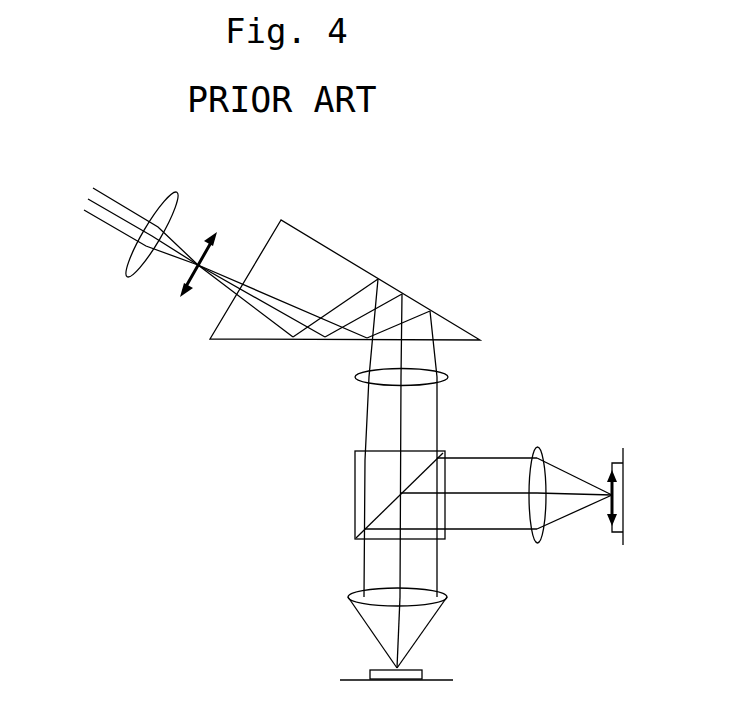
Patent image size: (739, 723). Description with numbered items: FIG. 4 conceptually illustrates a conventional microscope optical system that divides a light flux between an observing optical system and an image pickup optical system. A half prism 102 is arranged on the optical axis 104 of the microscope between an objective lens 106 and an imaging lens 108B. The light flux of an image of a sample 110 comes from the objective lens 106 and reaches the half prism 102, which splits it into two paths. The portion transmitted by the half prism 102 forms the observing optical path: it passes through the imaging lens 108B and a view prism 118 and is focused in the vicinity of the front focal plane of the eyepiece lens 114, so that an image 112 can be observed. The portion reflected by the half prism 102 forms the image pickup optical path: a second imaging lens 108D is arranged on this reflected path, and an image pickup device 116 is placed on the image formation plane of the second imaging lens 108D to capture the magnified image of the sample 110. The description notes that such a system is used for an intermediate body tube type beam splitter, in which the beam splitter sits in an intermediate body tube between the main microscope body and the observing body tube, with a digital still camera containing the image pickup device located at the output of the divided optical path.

The half prism 102 is at (441, 539).
The optical axis 104 is at (402, 413).
The objective lens 106 is at (358, 592).
The imaging lens 108B is at (355, 377).
The second imaging lens 108D is at (541, 533).
The sample 110 is at (413, 667).
The image 112 is at (199, 240).
The eyepiece lens 114 is at (142, 266).
The image pickup device 116 is at (610, 485).
The view prism 118 is at (322, 244).